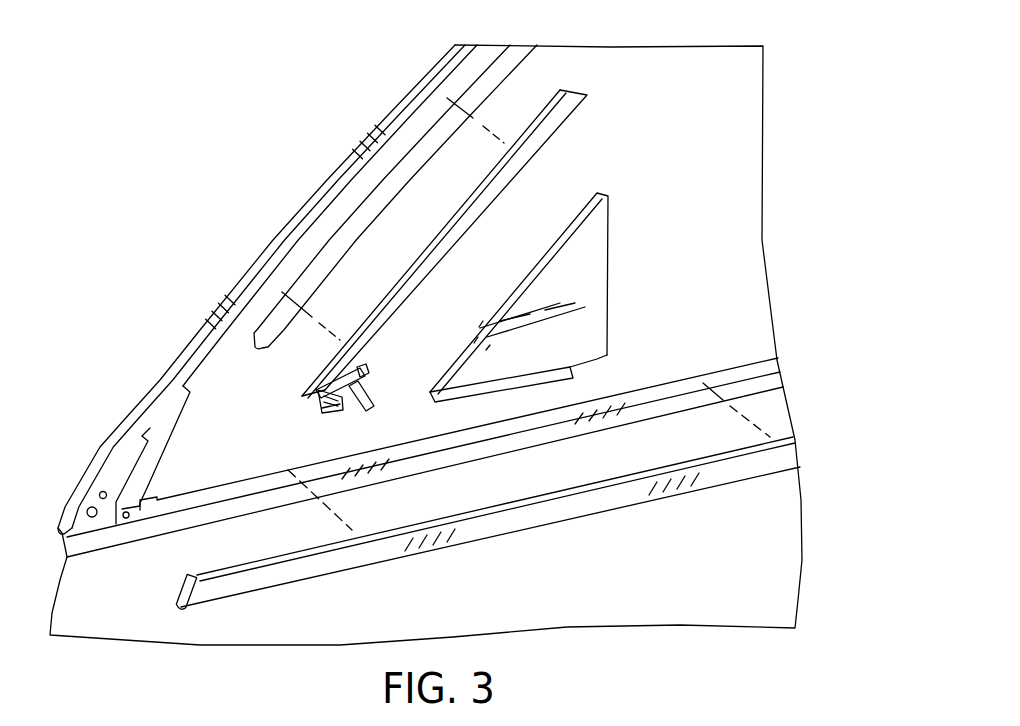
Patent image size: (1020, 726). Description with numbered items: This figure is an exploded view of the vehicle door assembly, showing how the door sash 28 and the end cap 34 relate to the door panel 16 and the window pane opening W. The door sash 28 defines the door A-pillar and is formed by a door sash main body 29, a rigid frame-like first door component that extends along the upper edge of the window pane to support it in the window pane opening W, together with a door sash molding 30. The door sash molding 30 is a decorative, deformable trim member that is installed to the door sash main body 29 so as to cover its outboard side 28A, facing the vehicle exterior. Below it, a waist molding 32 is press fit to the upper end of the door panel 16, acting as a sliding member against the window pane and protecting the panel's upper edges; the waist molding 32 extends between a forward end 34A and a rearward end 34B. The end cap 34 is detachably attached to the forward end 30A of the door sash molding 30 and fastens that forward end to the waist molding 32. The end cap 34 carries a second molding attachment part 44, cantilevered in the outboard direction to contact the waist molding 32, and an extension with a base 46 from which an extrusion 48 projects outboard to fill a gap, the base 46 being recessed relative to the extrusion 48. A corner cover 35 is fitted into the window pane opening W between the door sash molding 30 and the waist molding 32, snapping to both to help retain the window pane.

The window pane opening W is at (641, 110).
The door panel 16 is at (663, 387).
The door sash 28 is at (330, 172).
The outboard side 28A is at (302, 264).
The door sash main body 29 is at (411, 113).
The door sash molding 30 is at (548, 133).
The forward end 30A is at (307, 393).
The waist molding 32 is at (514, 518).
The end cap 34 is at (306, 414).
The forward end 34A is at (186, 592).
The rearward end 34B is at (778, 457).
The corner cover 35 is at (588, 262).
The second molding attachment part 44 is at (328, 408).
The base 46 is at (366, 370).
The extrusion 48 is at (359, 383).